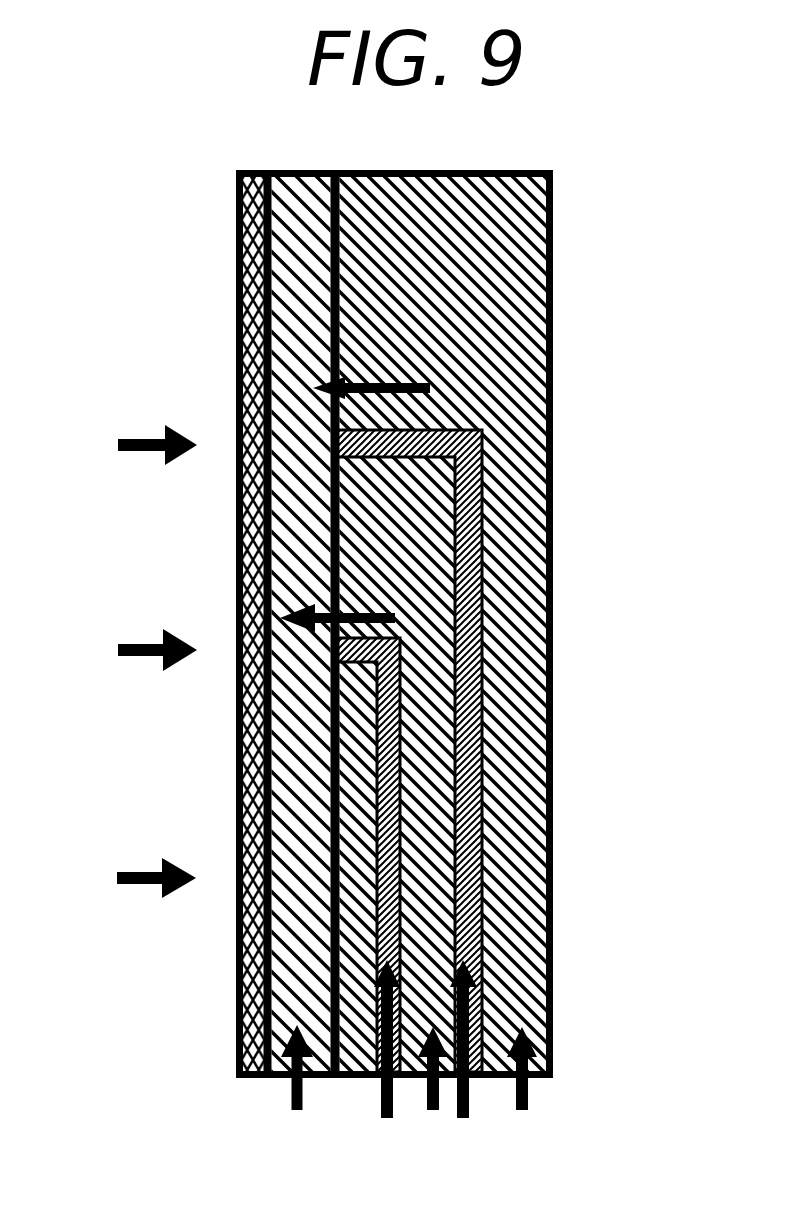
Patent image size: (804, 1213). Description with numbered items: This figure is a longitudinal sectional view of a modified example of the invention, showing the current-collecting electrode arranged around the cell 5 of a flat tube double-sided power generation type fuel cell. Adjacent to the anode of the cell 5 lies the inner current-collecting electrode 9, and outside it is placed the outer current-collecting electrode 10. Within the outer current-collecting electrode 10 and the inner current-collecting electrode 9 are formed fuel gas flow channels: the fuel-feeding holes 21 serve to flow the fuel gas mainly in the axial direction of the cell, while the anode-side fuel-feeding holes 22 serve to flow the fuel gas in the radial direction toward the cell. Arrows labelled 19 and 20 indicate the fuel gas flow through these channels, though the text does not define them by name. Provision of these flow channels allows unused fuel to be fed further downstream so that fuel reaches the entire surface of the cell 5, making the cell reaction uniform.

The cell 5 is at (255, 322).
The inner current-collecting electrode 9 is at (293, 277).
The outer current-collecting electrode 10 is at (490, 300).
The upward flow arrows (inlet flow) 19 is at (409, 1065).
The arrows indicating incident direction (light / heat) 20 is at (133, 661).
The fuel-feeding holes 21 is at (400, 697).
The anode-side fuel-feeding holes 22 is at (517, 444).